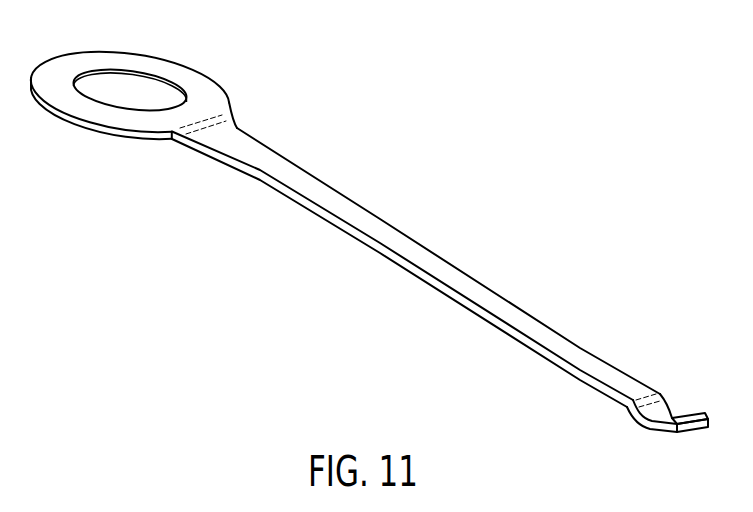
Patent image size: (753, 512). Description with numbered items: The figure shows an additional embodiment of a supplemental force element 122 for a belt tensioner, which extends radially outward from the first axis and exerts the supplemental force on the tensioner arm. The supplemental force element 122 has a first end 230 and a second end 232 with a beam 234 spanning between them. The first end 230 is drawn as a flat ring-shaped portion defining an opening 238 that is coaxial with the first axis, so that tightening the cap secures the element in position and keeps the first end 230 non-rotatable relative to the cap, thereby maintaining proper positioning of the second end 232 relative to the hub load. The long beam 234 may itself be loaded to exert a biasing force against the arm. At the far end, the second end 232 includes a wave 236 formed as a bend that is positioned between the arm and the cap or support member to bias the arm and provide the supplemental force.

The supplemental force element 122 is at (441, 179).
The first end 230 is at (195, 86).
The hole 238 is at (123, 90).
The beam 234 is at (464, 284).
The wave 236 is at (651, 431).
The second end 232 is at (665, 412).